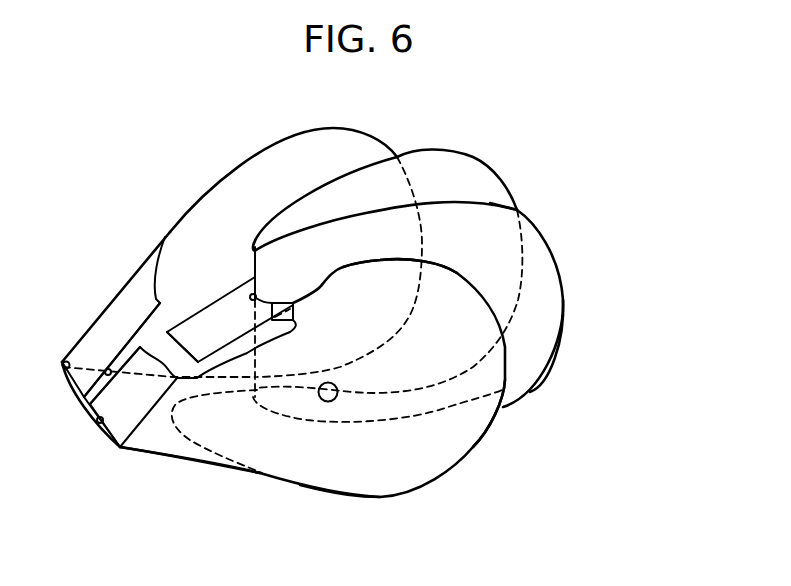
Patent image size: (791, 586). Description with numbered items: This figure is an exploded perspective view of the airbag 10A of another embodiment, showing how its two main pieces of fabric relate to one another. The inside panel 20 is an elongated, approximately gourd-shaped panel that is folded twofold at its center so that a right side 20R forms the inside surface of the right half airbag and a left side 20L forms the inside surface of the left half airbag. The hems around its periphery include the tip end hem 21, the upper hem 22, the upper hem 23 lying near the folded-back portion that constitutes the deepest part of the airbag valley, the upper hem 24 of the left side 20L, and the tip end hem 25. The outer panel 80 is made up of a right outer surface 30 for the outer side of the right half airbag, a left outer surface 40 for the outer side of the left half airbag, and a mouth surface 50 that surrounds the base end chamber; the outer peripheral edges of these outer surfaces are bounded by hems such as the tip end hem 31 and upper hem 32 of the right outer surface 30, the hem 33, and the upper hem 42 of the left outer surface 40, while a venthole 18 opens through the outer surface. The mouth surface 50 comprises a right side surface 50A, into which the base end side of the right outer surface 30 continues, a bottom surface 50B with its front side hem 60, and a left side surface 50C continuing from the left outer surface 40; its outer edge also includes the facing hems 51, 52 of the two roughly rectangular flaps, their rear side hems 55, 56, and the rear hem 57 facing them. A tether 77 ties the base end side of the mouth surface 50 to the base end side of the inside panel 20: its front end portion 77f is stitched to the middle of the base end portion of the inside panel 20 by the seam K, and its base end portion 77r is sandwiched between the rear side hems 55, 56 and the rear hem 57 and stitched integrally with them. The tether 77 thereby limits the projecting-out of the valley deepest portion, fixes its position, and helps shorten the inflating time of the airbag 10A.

The airbag 10A is at (587, 374).
The inside panel 20 is at (506, 160).
The left side of inside panel 20L is at (457, 164).
The right side of inside panel 20R is at (543, 268).
The tip end hem 21 is at (563, 303).
The upper hem 22 is at (366, 213).
The upper hem in the vicinity of the folded-back portion 23 is at (262, 246).
The upper hem of the left side 24 is at (340, 173).
The tip end hem 25 is at (517, 207).
The right outer surface 30 is at (419, 513).
The tip end hem 31 is at (497, 422).
The upper hem 32 is at (383, 260).
The lower edge of outer panel 33 is at (337, 497).
The venthole 18 is at (337, 398).
The left outer surface 40 is at (271, 141).
The upper hem 42 is at (226, 181).
The mouth surface 50 is at (177, 488).
The right side surface 50A is at (147, 430).
The bottom surface 50B is at (100, 440).
The left side surface 50C is at (95, 314).
The facing hem 51 is at (107, 373).
The facing hem 52 is at (123, 357).
The rear side hem 55 is at (100, 420).
The rear side hem 56 is at (63, 360).
The rear hem 57 is at (87, 423).
The front side hem of the bottom surface 60 is at (180, 394).
The tether 77 is at (223, 312).
The front end portion of the tether 77f is at (256, 297).
The base end portion of the tether 77r is at (182, 333).
The outer panel 80 is at (491, 476).
The seam K is at (295, 328).